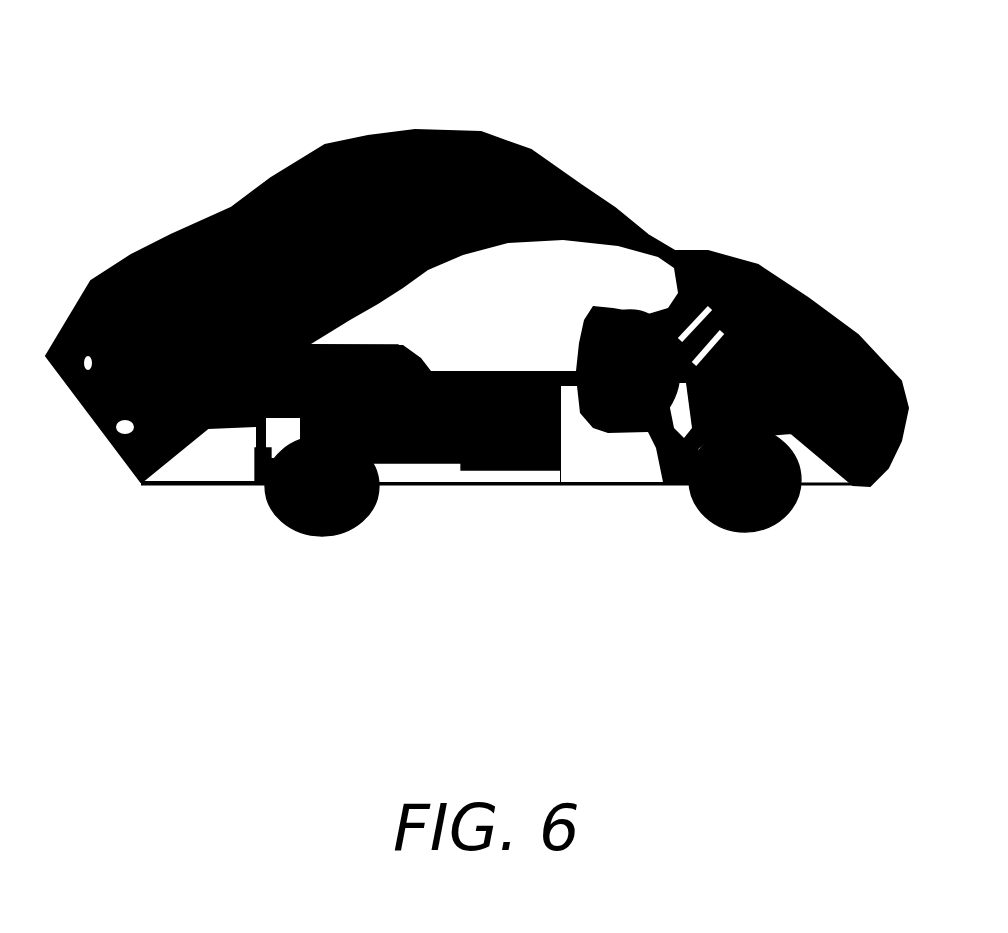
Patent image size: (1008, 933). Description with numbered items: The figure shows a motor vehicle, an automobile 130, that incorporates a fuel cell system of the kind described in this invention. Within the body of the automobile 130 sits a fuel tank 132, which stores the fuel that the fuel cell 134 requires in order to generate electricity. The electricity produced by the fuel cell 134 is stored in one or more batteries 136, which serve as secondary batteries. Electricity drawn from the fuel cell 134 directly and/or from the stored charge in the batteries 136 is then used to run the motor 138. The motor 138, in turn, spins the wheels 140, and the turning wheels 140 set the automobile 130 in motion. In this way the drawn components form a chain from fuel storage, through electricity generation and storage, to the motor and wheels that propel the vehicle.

The automobile 130 is at (722, 188).
The fuel tank 132 is at (203, 427).
The fuel cell 134 is at (397, 455).
The batteries 136 is at (505, 465).
The motor 138 is at (661, 407).
The wheels 140 is at (749, 527).